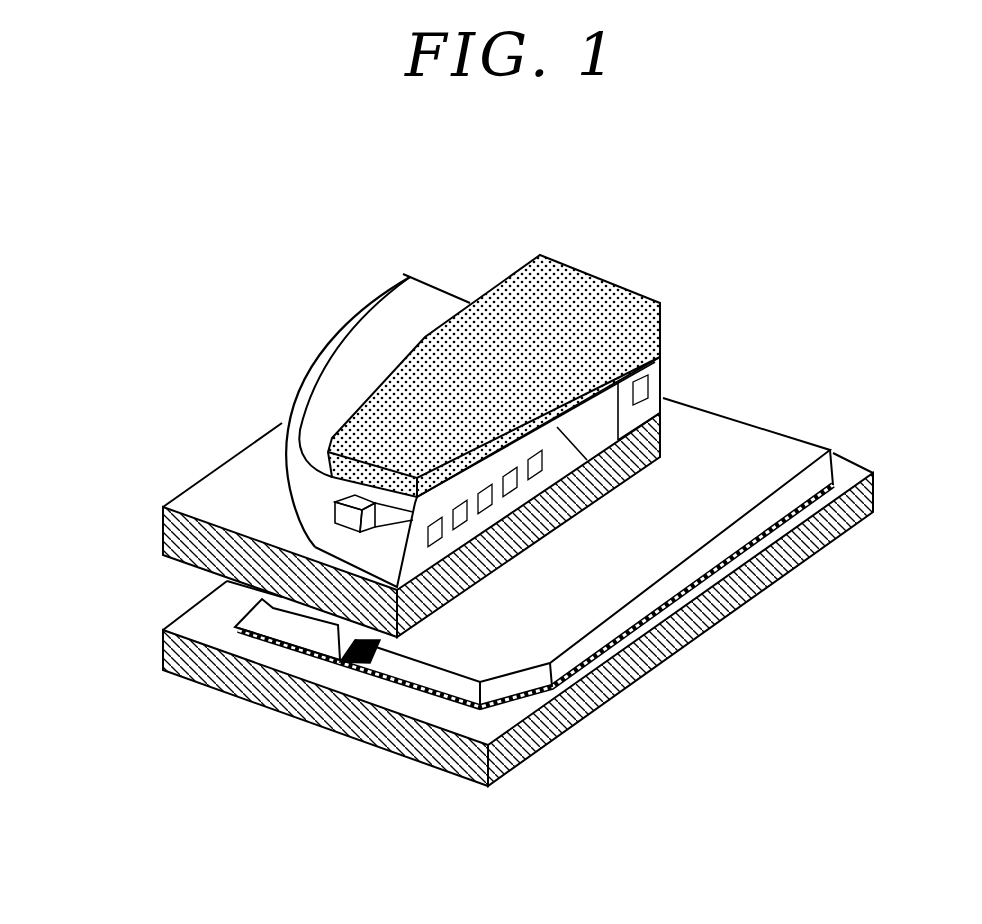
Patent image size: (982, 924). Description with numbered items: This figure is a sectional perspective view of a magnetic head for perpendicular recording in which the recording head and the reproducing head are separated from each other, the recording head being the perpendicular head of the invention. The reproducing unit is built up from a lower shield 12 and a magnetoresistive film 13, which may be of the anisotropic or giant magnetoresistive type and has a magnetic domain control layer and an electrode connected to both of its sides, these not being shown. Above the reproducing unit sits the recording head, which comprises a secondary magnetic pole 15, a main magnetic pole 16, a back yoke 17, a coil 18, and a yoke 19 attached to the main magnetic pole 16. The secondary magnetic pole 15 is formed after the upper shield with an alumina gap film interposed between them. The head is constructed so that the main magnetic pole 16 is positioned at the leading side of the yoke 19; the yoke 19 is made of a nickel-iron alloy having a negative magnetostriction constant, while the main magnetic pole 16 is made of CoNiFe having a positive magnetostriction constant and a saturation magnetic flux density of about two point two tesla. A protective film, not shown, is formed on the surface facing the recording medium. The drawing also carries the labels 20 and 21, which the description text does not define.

The lower shield 12 is at (600, 712).
The magnetoresistive film 13 is at (343, 665).
The secondary magnetic pole 15 is at (165, 540).
The main magnetic pole 16 is at (335, 505).
The back yoke 17 is at (598, 432).
The coil 18 is at (600, 522).
The yoke 19 is at (593, 277).
The lens 20 is at (358, 350).
The step layer 21 is at (427, 675).